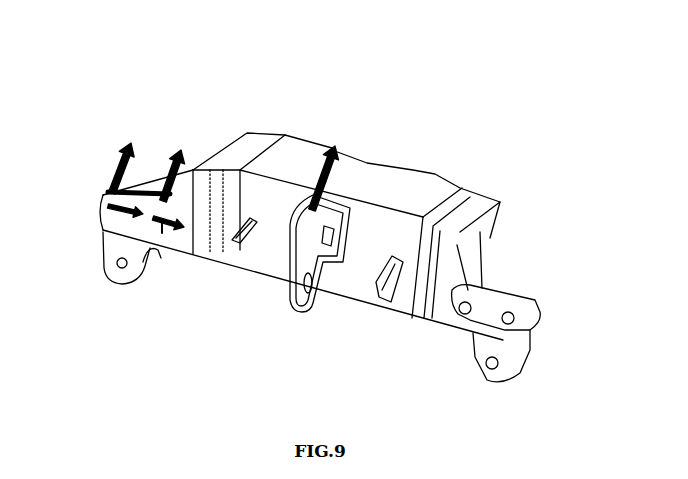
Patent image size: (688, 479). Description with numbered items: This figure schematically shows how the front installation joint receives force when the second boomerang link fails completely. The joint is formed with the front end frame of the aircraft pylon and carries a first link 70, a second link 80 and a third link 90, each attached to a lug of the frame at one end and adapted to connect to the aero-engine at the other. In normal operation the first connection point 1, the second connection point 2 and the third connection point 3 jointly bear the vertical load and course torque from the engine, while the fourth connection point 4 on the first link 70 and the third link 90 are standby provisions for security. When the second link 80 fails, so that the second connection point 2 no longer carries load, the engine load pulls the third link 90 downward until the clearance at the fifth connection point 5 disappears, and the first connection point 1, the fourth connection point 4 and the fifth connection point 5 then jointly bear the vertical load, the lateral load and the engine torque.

The first connection point 1 is at (115, 217).
The second connection point 2 is at (466, 307).
The third connection point 3 is at (509, 317).
The fourth connection point 4 is at (161, 232).
The fifth connection point 5 is at (328, 238).
The first link 70 is at (132, 250).
The second link 80 is at (490, 348).
The third link 90 is at (307, 278).